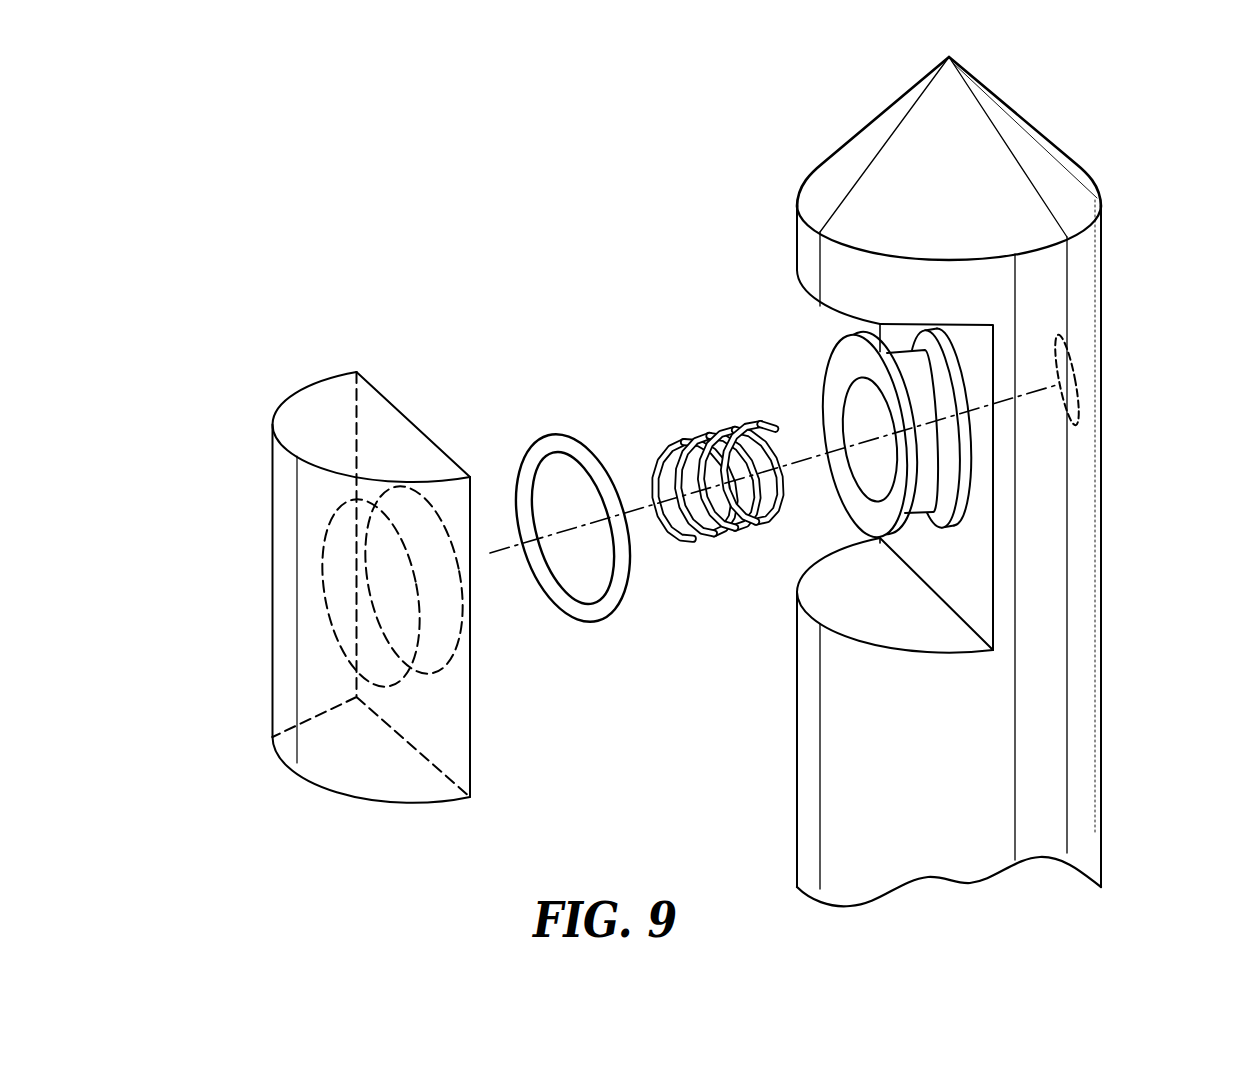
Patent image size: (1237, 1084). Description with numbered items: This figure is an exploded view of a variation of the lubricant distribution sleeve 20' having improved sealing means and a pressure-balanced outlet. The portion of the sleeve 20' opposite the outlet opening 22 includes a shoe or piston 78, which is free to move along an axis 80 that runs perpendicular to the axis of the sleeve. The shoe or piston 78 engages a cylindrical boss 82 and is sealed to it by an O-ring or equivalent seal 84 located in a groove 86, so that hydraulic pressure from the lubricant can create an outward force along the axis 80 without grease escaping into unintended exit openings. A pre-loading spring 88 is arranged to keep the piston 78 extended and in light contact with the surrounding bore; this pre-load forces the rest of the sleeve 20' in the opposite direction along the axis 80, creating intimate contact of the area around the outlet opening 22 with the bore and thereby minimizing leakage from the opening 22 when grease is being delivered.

The distribution sleeve 20' is at (1005, 481).
The outlet opening 22 is at (1074, 354).
The shoe or piston 78 is at (288, 531).
The axis 80 is at (497, 552).
The cylindrical boss 82 is at (824, 384).
The O-ring or equivalent seal 84 is at (575, 437).
The groove 86 is at (900, 350).
The pre-loading spring 88 is at (697, 537).